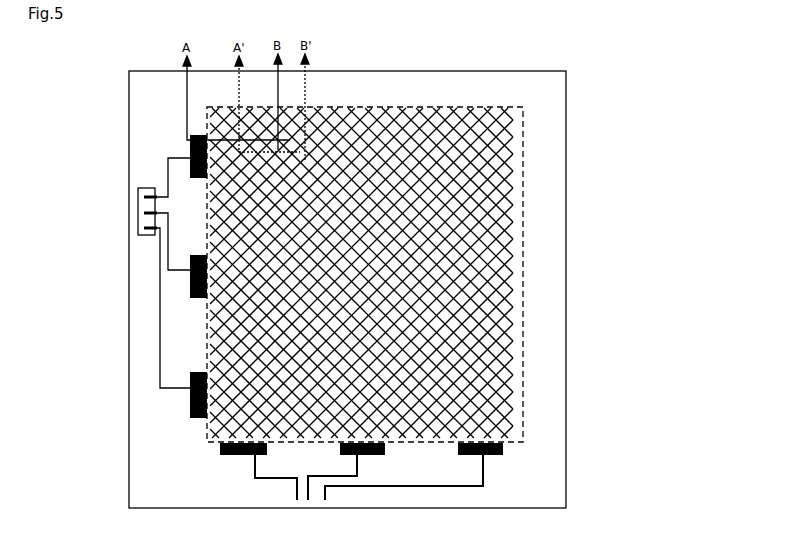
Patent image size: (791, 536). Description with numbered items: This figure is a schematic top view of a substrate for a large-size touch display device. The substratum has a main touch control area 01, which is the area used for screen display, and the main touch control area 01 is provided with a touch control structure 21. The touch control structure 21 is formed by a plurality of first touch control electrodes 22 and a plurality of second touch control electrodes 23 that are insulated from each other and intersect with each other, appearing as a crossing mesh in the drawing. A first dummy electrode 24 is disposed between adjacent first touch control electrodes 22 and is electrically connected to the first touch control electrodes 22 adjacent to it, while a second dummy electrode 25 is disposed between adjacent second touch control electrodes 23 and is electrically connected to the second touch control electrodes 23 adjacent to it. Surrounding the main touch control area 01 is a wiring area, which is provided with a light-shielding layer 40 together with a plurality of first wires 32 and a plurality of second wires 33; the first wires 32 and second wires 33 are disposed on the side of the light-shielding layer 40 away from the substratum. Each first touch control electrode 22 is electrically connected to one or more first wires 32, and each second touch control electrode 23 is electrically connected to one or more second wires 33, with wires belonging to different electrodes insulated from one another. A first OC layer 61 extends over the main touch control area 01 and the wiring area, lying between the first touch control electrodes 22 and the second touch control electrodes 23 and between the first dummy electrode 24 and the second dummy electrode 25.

The main touch control area 01 is at (513, 110).
The touch control structure 21 is at (634, 110).
The first touch control electrodes 22 is at (517, 157).
The second touch control electrodes 23 is at (498, 118).
The first dummy electrode 24 is at (513, 207).
The second dummy electrode 25 is at (405, 112).
The first wires 32 is at (138, 262).
The second wires 33 is at (485, 470).
The light-shielding layer 40 is at (555, 357).
The first OC layer 61 is at (550, 313).